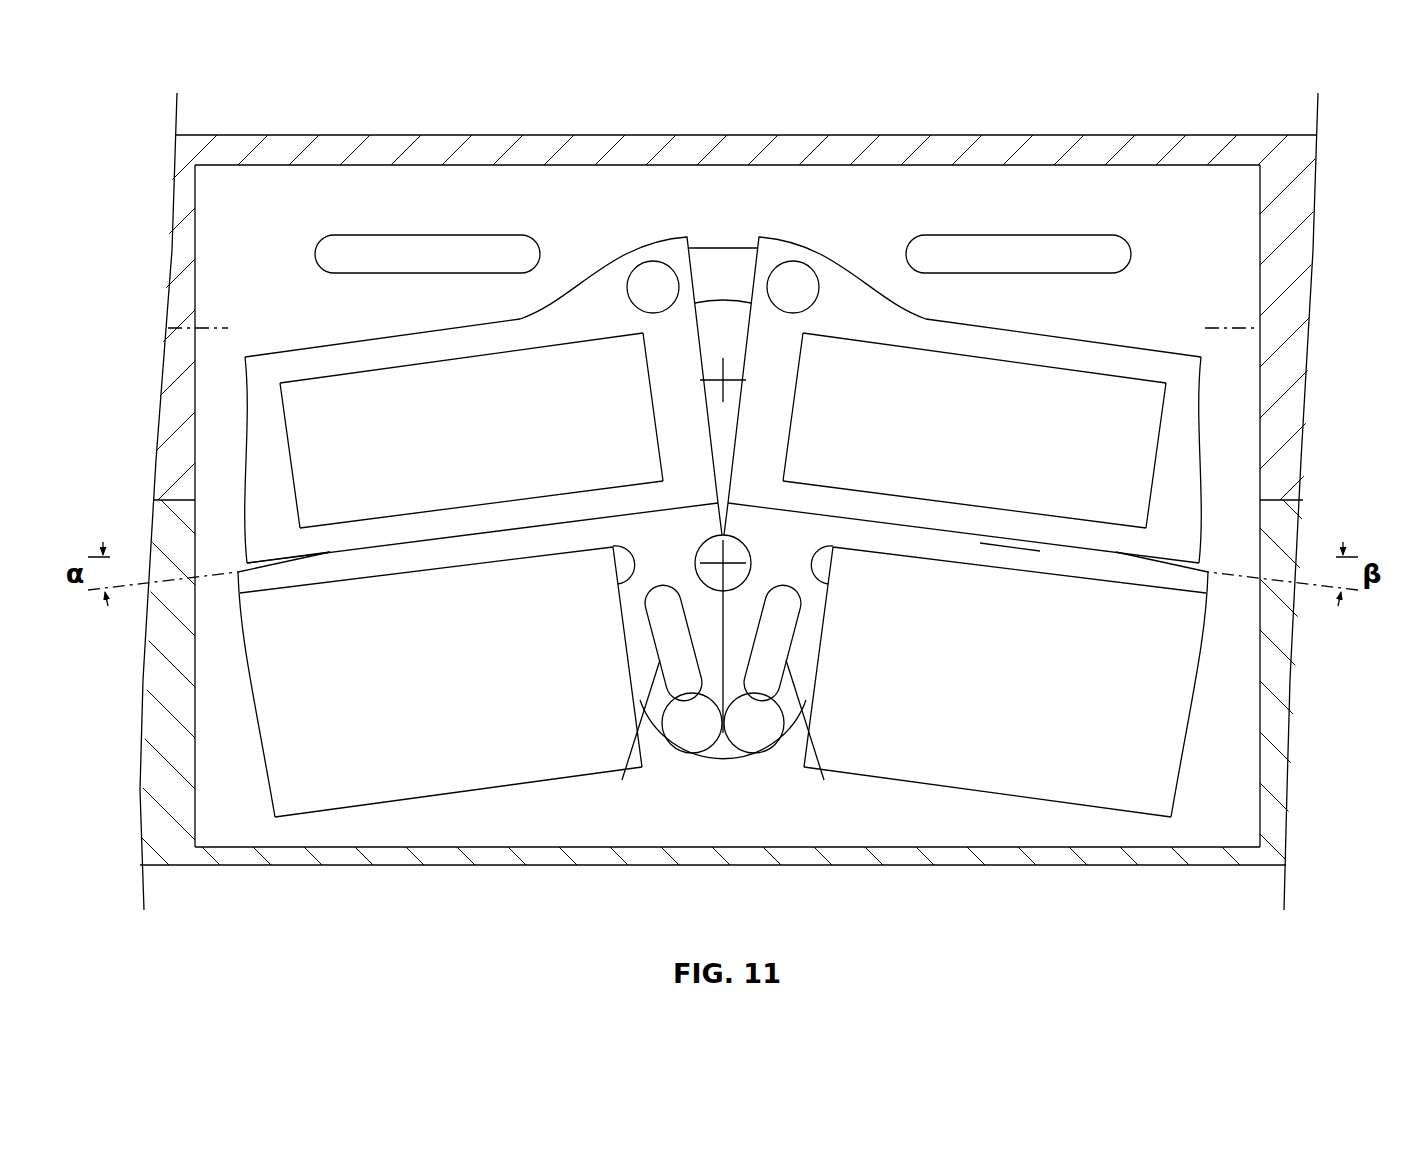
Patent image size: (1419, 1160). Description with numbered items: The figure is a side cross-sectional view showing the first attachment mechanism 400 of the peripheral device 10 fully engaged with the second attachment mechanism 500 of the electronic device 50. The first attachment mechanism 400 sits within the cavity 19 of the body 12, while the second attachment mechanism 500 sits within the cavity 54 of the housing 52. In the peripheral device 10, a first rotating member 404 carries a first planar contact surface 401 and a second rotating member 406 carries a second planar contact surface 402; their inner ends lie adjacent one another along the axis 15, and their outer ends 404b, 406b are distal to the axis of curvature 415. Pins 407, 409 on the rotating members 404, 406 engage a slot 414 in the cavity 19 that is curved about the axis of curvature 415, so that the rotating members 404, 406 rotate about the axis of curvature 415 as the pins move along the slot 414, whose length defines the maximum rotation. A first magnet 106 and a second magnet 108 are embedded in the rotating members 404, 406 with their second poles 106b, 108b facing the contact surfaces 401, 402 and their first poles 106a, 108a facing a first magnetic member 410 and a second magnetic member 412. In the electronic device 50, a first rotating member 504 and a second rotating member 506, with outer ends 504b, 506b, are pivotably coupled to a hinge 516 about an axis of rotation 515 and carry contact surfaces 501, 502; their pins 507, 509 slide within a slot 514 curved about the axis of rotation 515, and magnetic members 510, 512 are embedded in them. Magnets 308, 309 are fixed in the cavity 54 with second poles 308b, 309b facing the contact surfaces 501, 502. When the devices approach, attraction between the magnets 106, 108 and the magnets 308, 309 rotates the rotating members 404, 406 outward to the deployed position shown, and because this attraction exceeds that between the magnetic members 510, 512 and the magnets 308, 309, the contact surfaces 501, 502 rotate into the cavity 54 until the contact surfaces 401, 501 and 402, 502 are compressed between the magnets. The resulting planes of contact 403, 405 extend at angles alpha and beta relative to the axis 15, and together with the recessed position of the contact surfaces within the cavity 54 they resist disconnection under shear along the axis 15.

The peripheral device 10 is at (152, 134).
The body 12 is at (1242, 133).
The axis 15 is at (1287, 327).
The cavity 19 is at (225, 237).
The electronic device 50 is at (153, 498).
The housing 52 is at (218, 867).
The cavity 54 is at (220, 818).
The first magnet 106 is at (371, 608).
The first pole 106a is at (403, 362).
The second pole 106b is at (409, 516).
The second magnet 108 is at (1080, 608).
The first pole 108a is at (1044, 362).
The second pole 108b is at (1085, 532).
The magnet 308 is at (344, 553).
The second pole 308b is at (485, 559).
The magnet 309 is at (1097, 556).
The second pole 309b is at (965, 560).
The first attachment mechanism 400 is at (720, 576).
The first planar contact surface 401 is at (319, 556).
The second planar contact surface 402 is at (1010, 545).
The plane of contact 403 is at (130, 590).
The first rotating member 404 is at (377, 400).
The outer end 404b is at (240, 548).
The plane of contact 405 is at (1316, 590).
The second rotating member 406 is at (1065, 400).
The outer end 406b is at (1208, 524).
The pin 407 is at (653, 261).
The pin 409 is at (793, 261).
The first magnetic member 410 is at (390, 234).
The second magnetic member 412 is at (1035, 234).
The slot 414 is at (727, 247).
The axis of curvature 415 is at (732, 376).
The second attachment mechanism 500 is at (718, 598).
The first planar contact surface 501 is at (560, 522).
The second planar contact surface 502 is at (886, 522).
The first rotating member 504 is at (618, 612).
The outer end 504b is at (238, 596).
The second rotating member 506 is at (828, 612).
The outer end 506b is at (1208, 596).
The pin 507 is at (667, 766).
The pin 509 is at (781, 766).
The magnetic member 510 is at (622, 780).
The magnetic member 512 is at (824, 780).
The slot 514 is at (727, 760).
The axis of rotation 515 is at (731, 562).
The hinge 516 is at (700, 547).